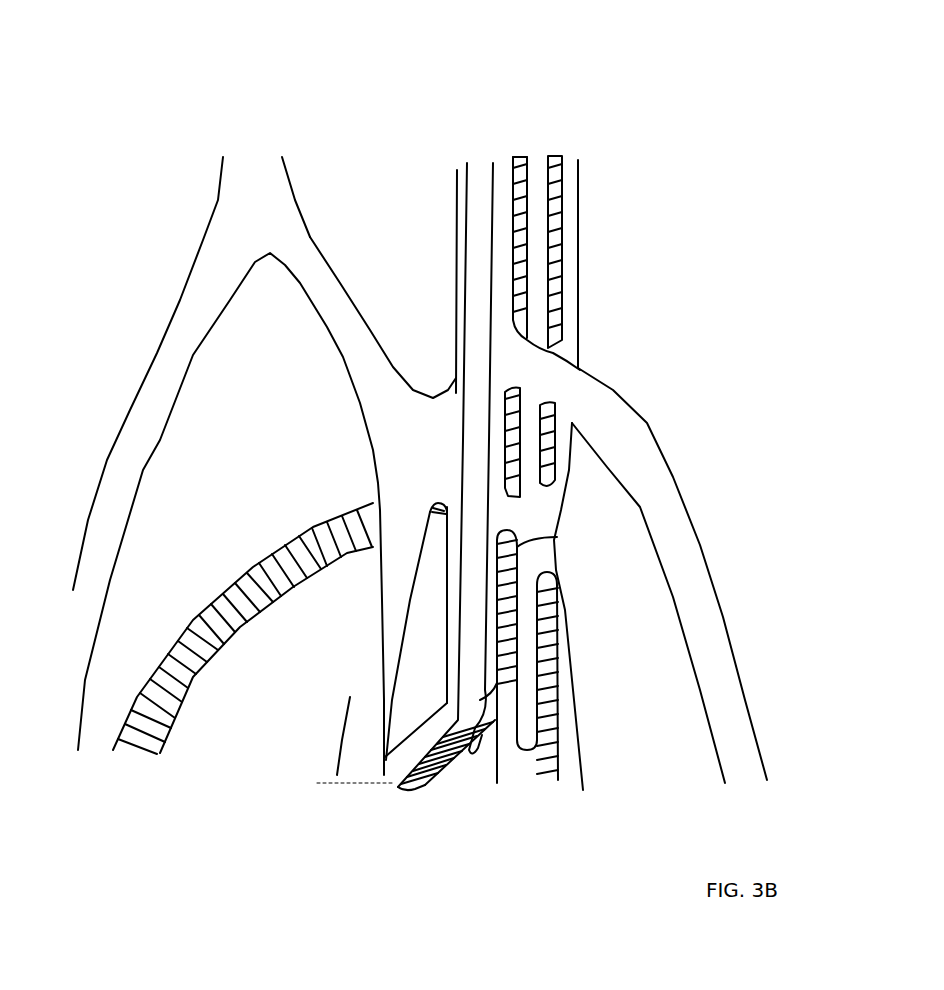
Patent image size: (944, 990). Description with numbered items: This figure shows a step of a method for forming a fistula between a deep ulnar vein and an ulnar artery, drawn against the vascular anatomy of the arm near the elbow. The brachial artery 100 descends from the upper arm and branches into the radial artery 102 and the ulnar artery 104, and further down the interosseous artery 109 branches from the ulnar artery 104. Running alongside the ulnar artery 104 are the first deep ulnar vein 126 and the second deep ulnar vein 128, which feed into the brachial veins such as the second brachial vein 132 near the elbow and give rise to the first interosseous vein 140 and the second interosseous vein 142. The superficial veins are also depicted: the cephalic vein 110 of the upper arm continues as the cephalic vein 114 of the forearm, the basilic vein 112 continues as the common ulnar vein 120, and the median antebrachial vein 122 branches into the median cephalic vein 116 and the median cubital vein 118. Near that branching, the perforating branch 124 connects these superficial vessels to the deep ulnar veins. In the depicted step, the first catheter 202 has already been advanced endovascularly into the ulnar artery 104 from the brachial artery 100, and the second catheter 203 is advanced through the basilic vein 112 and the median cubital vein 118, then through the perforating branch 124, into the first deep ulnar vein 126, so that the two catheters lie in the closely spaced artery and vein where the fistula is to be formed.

The brachial artery 100 is at (553, 160).
The radial artery 102 is at (158, 697).
The ulnar artery 104 is at (528, 763).
The interosseous artery 109 is at (419, 780).
The cephalic vein 110 is at (258, 168).
The basilic vein 112 is at (457, 177).
The cephalic vein 114 is at (203, 310).
The median cephalic vein 116 is at (362, 355).
The median cubital vein 118 is at (451, 396).
The common ulnar vein 120 is at (708, 675).
The median antebrachial vein 122 is at (360, 690).
The perforating branch 124 is at (450, 532).
The first deep ulnar vein 126 is at (472, 768).
The second deep ulnar vein 128 is at (573, 733).
The second brachial vein 132 is at (575, 175).
The first interosseous vein 140 is at (388, 770).
The second interosseous vein 142 is at (439, 788).
The first catheter 202 is at (538, 177).
The second catheter 203 is at (484, 176).